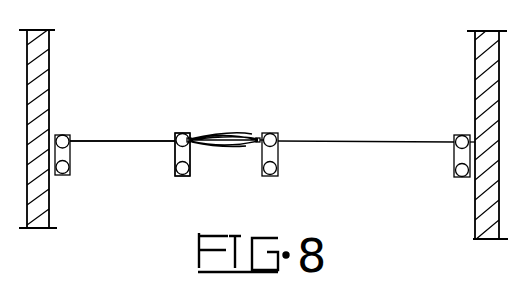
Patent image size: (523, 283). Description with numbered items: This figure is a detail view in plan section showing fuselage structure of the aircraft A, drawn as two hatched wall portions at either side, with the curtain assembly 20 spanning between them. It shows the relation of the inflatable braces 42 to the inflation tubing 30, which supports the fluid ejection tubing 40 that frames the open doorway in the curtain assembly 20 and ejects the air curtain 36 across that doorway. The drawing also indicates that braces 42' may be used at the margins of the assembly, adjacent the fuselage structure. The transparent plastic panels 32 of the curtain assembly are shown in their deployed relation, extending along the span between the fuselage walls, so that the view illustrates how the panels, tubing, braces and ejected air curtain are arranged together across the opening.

The aircraft A is at (48, 63).
The curtain assembly 20 is at (312, 136).
The transparent plastic panels 32 is at (103, 137).
The inflation tubing 30 is at (177, 137).
The fluid ejection tubing 40 is at (190, 137).
The air curtain 36 is at (235, 133).
The inflatable braces 42 is at (161, 178).
The braces 42' is at (87, 179).